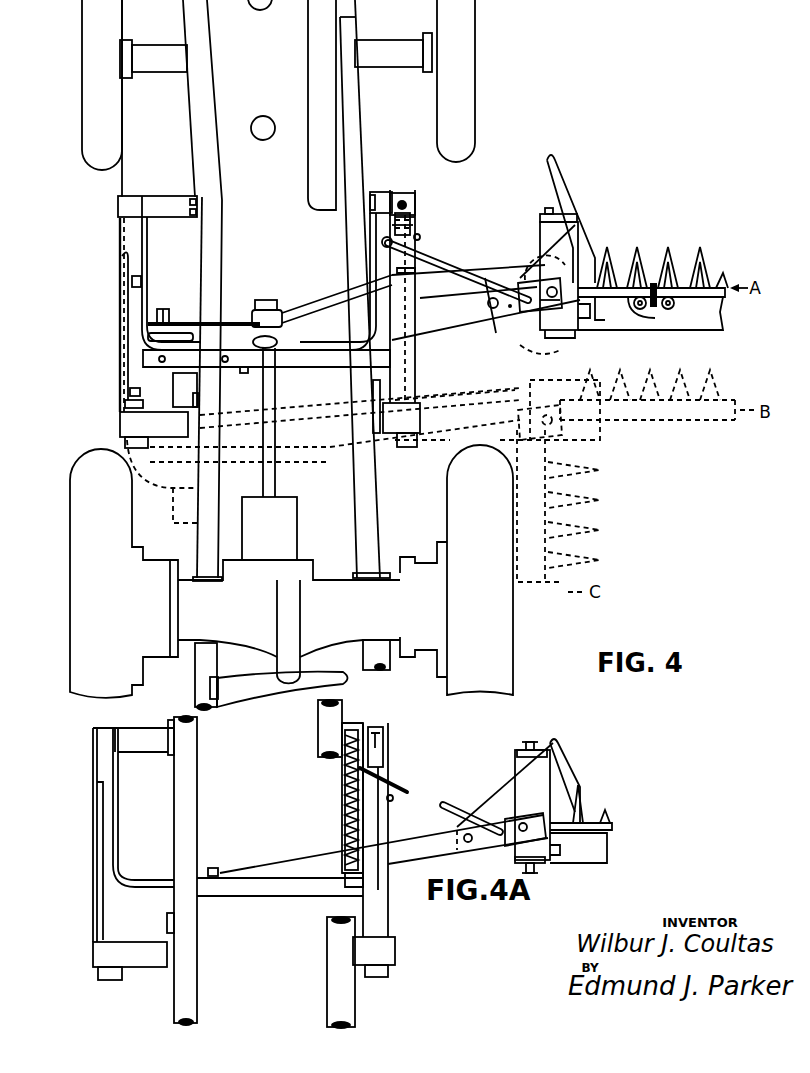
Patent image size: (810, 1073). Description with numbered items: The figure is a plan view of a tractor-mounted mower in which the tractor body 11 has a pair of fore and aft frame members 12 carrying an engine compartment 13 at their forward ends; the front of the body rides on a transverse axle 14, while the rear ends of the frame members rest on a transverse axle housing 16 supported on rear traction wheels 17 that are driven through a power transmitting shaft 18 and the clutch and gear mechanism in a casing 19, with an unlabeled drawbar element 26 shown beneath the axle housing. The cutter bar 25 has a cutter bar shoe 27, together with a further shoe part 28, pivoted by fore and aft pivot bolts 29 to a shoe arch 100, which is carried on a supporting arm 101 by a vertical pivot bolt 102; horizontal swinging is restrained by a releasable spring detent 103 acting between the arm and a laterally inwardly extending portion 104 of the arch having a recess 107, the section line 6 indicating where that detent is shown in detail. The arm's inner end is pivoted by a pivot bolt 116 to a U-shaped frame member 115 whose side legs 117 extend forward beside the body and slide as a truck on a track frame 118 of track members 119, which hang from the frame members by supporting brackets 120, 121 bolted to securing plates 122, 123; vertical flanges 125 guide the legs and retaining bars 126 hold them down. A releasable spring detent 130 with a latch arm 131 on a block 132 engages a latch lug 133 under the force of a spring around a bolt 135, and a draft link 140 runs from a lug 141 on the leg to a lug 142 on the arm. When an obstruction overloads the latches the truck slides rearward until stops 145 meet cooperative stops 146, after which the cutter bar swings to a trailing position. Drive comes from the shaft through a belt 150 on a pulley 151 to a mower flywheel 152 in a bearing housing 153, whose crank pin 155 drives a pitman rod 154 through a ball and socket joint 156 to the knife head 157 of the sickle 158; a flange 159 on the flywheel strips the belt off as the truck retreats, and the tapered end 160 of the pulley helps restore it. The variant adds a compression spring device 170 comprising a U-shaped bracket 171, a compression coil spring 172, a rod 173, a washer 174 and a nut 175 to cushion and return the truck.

In FIG. 4, the section line 6- 6 is at (478, 290).
In FIG. 4, the body 11 is at (183, 128).
In FIG. 4, the frame members 12 is at (213, 236).
In FIG. 4A, the frame members 12 is at (197, 777).
In FIG. 4, the engine compartment 13 is at (328, 113).
In FIG. 4, the transverse axle 14 is at (380, 50).
In FIG. 4, the transverse axle housing 16 is at (323, 590).
In FIG. 4, the rear traction wheels 17 is at (72, 612).
In FIG. 4, the power transmitting shaft 18 is at (267, 407).
In FIG. 4, the casing 19 is at (288, 525).
In FIG. 4, the cutter bar 25 is at (693, 322).
In FIG. 4A, the cutter bar 25 is at (603, 848).
In FIG. 4, the drawbar 26 is at (331, 676).
In FIG. 4, the cutter bar shoe 27 is at (587, 247).
In FIG. 4A, the cutter bar shoe 27 is at (565, 781).
In FIG. 4, the clamp plate 28 is at (577, 222).
In FIG. 4A, the clamp plate 28 is at (551, 752).
In FIG. 4, the pivot bolts 29 is at (545, 213).
In FIG. 4A, the pivot bolts 29 is at (530, 742).
In FIG. 4, the shoe arch 100 is at (530, 248).
In FIG. 4A, the shoe arch 100 is at (503, 786).
In FIG. 4, the supporting arm 101 is at (432, 325).
In FIG. 4A, the supporting arm 101 is at (270, 862).
In FIG. 4, the vertical pivot bolt 102 is at (553, 286).
In FIG. 4A, the vertical pivot bolt 102 is at (525, 822).
In FIG. 4, the releasable spring detent 103 is at (500, 315).
In FIG. 4A, the releasable spring detent 103 is at (469, 848).
In FIG. 4, the laterally inwardly extending portion 104 is at (535, 352).
In FIG. 4, the recess 107 is at (545, 392).
In FIG. 4, the U-shaped frame member 115 is at (298, 363).
In FIG. 4A, the U-shaped frame member 115 is at (268, 891).
In FIG. 4, the pivot bolt 116 is at (242, 371).
In FIG. 4A, the pivot bolt 116 is at (213, 870).
In FIG. 4, the side legs 117 is at (135, 243).
In FIG. 4A, the side legs 117 is at (112, 789).
In FIG. 4, the track frame 118 is at (119, 258).
In FIG. 4A, the track frame 118 is at (91, 764).
In FIG. 4, the track members 119 is at (418, 237).
In FIG. 4A, the track members 119 is at (392, 798).
In FIG. 4, the supporting brackets 120 is at (158, 200).
In FIG. 4A, the supporting brackets 120 is at (145, 744).
In FIG. 4, the supporting brackets 121 is at (135, 425).
In FIG. 4A, the supporting brackets 121 is at (137, 958).
In FIG. 4, the securing plates 122 is at (368, 186).
In FIG. 4, the securing plates 123 is at (198, 398).
In FIG. 4A, the securing plates 123 is at (167, 923).
In FIG. 4, the vertical flanges 125 is at (125, 367).
In FIG. 4A, the vertical flanges 125 is at (100, 883).
In FIG. 4, the retaining bars 126 is at (128, 300).
In FIG. 4, the releasable spring detent 130 is at (420, 221).
In FIG. 4, the latch arm 131 is at (412, 210).
In FIG. 4A, the latch arm 131 is at (384, 742).
In FIG. 4, the block 132 is at (400, 195).
In FIG. 4, the latch lug 133 is at (392, 227).
In FIG. 4, the bolt 135 is at (410, 205).
In FIG. 4, the draft link 140 is at (453, 258).
In FIG. 4A, the draft link 140 is at (445, 803).
In FIG. 4, the lug 141 is at (382, 243).
In FIG. 4, the lug 142 is at (540, 302).
In FIG. 4, the stops 145 is at (140, 278).
In FIG. 4, the cooperative stops 146 is at (128, 405).
In FIG. 4, the belt 150 is at (233, 328).
In FIG. 4, the pulley 151 is at (273, 318).
In FIG. 4, the mower flywheel 152 is at (160, 347).
In FIG. 4, the bearing housing 153 is at (176, 401).
In FIG. 4, the pitman rod 154 is at (314, 296).
In FIG. 4, the crank pin 155 is at (164, 310).
In FIG. 4, the ball and socket joint 156 is at (607, 313).
In FIG. 4, the knife head 157 is at (651, 306).
In FIG. 4, the sickle 158 is at (688, 292).
In FIG. 4A, the sickle 158 is at (603, 818).
In FIG. 4, the flange 159 is at (148, 325).
In FIG. 4, the tapered end 160 is at (273, 343).
In FIG. 4A, the compression spring device 170 is at (333, 818).
In FIG. 4A, the U-shaped bracket 171 is at (347, 843).
In FIG. 4A, the compression coil spring 172 is at (362, 822).
In FIG. 4A, the rod 173 is at (342, 862).
In FIG. 4A, the washer 174 is at (370, 767).
In FIG. 4A, the nut 175 is at (343, 752).